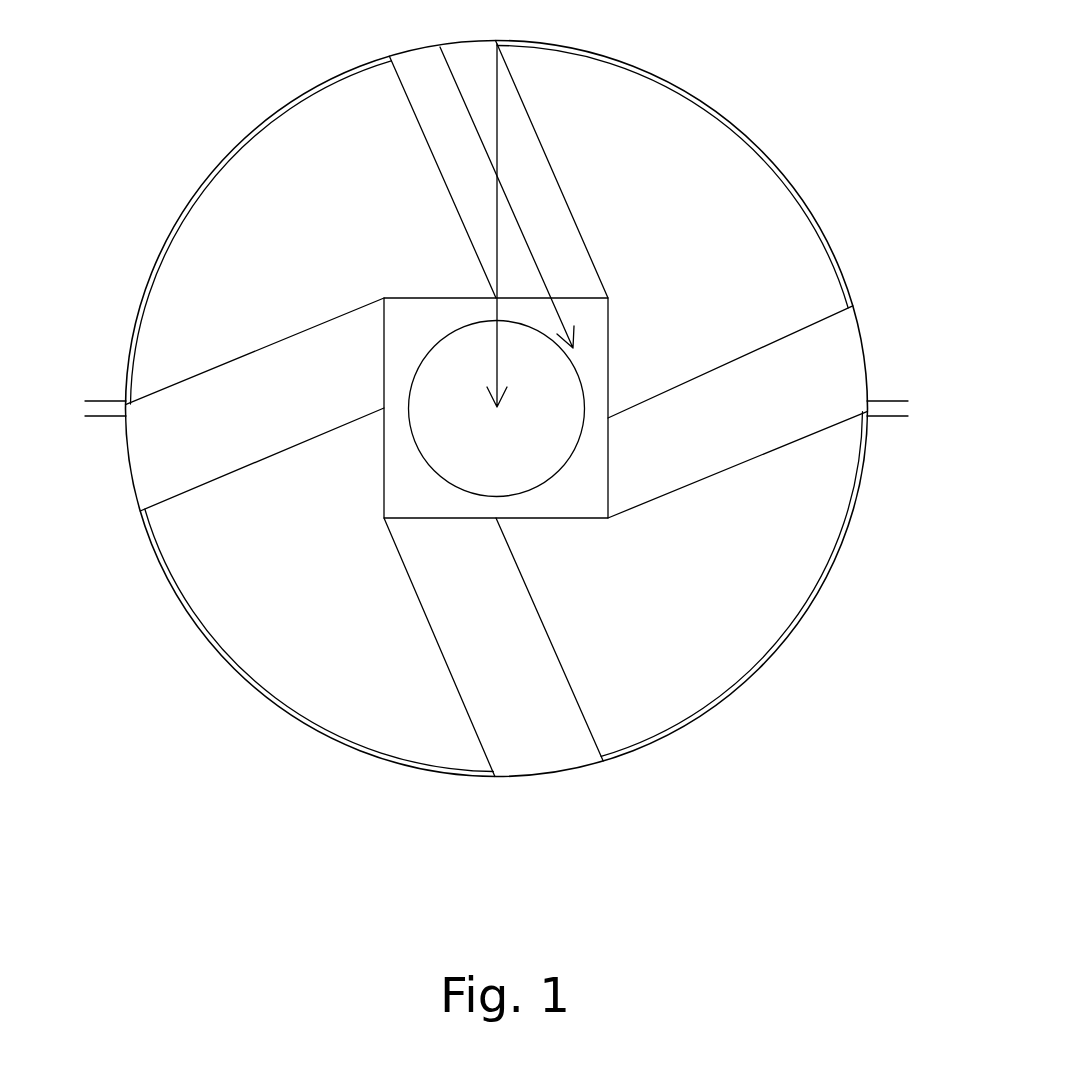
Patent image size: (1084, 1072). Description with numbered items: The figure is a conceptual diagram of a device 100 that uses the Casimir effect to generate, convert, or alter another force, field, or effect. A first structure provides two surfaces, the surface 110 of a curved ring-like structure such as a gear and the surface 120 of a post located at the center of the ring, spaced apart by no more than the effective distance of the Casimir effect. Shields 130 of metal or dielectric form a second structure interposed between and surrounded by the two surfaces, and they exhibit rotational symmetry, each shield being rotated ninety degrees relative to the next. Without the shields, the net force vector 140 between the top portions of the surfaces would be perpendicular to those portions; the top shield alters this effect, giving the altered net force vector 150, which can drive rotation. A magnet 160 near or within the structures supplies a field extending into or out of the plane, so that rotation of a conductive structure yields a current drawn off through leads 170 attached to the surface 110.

The device 100 is at (125, 115).
The surface of the ring-like structure 110 is at (543, 298).
The surface of the post 120 is at (436, 47).
The shields 130 is at (713, 155).
The net force vector 140 is at (496, 213).
The net force vector 150 is at (467, 100).
The magnet 160 is at (450, 447).
The leads 170 is at (98, 408).